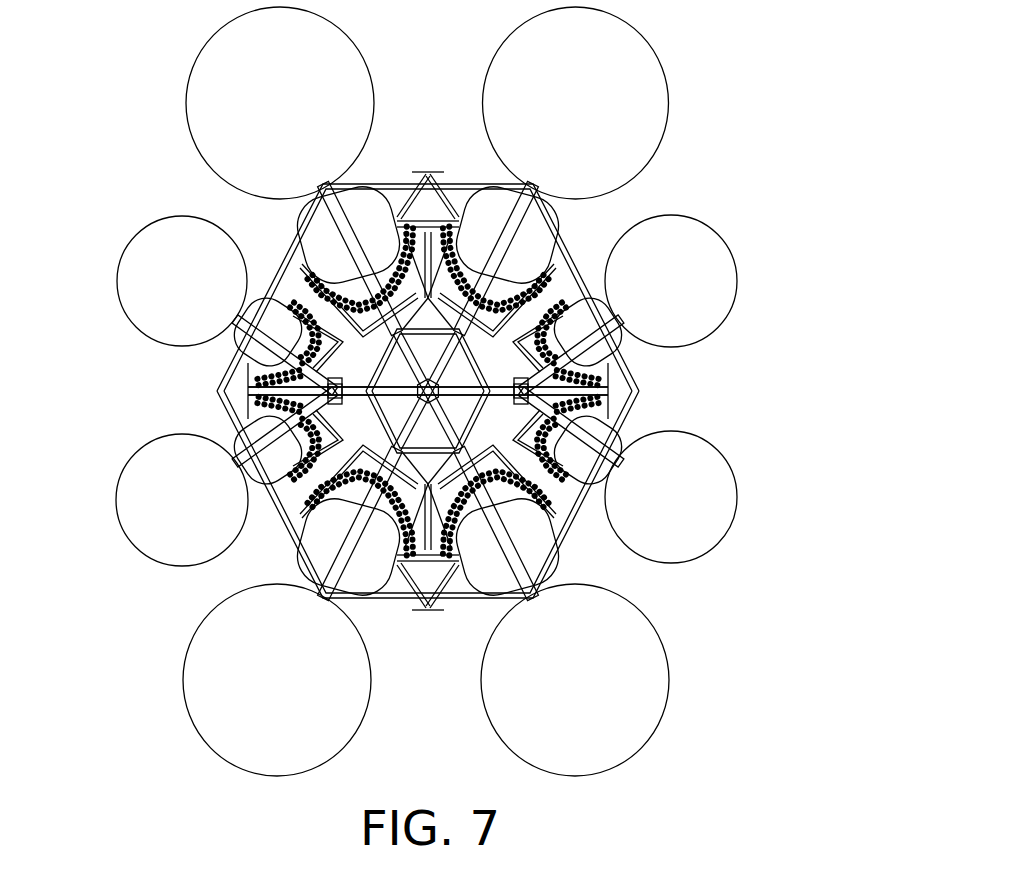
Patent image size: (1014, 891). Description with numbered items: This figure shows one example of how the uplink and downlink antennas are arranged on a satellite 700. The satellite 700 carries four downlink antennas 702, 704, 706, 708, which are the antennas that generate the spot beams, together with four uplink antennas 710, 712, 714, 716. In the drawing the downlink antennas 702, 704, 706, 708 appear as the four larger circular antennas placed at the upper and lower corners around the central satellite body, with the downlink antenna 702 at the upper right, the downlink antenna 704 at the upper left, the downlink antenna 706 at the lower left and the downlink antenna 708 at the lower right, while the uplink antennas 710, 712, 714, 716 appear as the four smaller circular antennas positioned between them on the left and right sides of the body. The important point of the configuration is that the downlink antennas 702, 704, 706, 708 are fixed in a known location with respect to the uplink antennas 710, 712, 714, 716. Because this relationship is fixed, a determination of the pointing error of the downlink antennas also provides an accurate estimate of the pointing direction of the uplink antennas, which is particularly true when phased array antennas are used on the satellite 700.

The satellite 700 is at (800, 413).
The downlink antenna 702 is at (668, 125).
The downlink antenna 704 is at (185, 128).
The downlink antenna 706 is at (190, 656).
The downlink antenna 708 is at (670, 655).
The uplink antenna 710 is at (733, 315).
The uplink antenna 712 is at (123, 318).
The uplink antenna 714 is at (127, 467).
The uplink antenna 716 is at (733, 465).